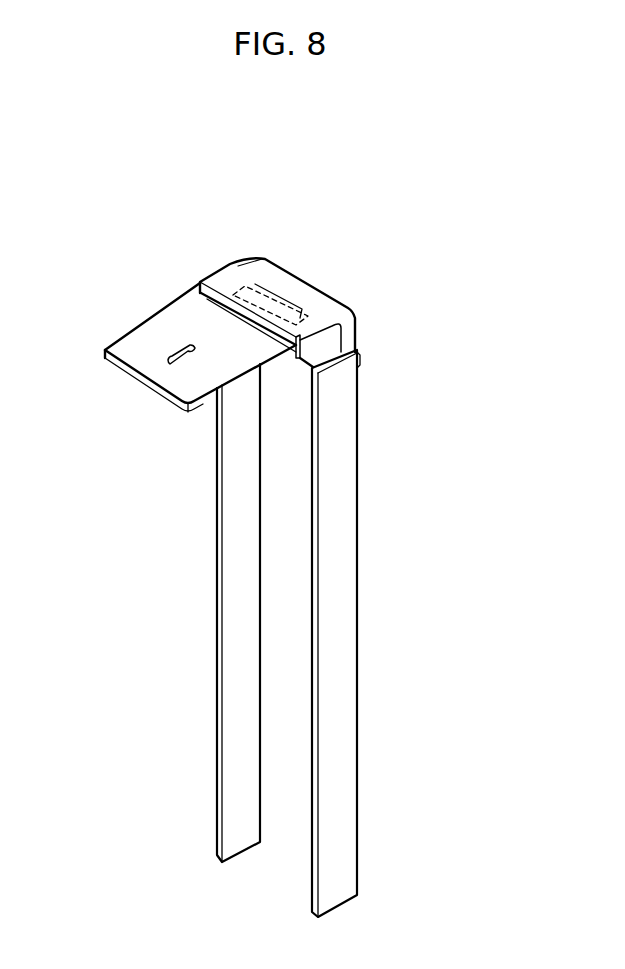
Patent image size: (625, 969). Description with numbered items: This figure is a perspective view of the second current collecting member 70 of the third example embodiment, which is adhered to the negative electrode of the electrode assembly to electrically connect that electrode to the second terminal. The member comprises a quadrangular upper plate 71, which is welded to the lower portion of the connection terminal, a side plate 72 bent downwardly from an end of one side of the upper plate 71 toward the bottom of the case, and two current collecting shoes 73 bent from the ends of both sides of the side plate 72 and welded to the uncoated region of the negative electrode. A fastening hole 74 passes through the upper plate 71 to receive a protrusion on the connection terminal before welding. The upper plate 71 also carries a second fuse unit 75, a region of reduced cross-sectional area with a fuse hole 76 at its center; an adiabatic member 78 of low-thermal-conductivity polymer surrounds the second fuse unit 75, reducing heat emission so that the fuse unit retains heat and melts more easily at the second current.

The second current collecting member 70 is at (306, 261).
The upper plate 71 is at (151, 339).
The side plate 72 is at (338, 334).
The current collecting shoes 73 is at (335, 643).
The fastening hole 74 is at (166, 356).
The second fuse unit 75 is at (227, 288).
The fuse hole 76 is at (240, 292).
The adiabatic member 78 is at (325, 307).